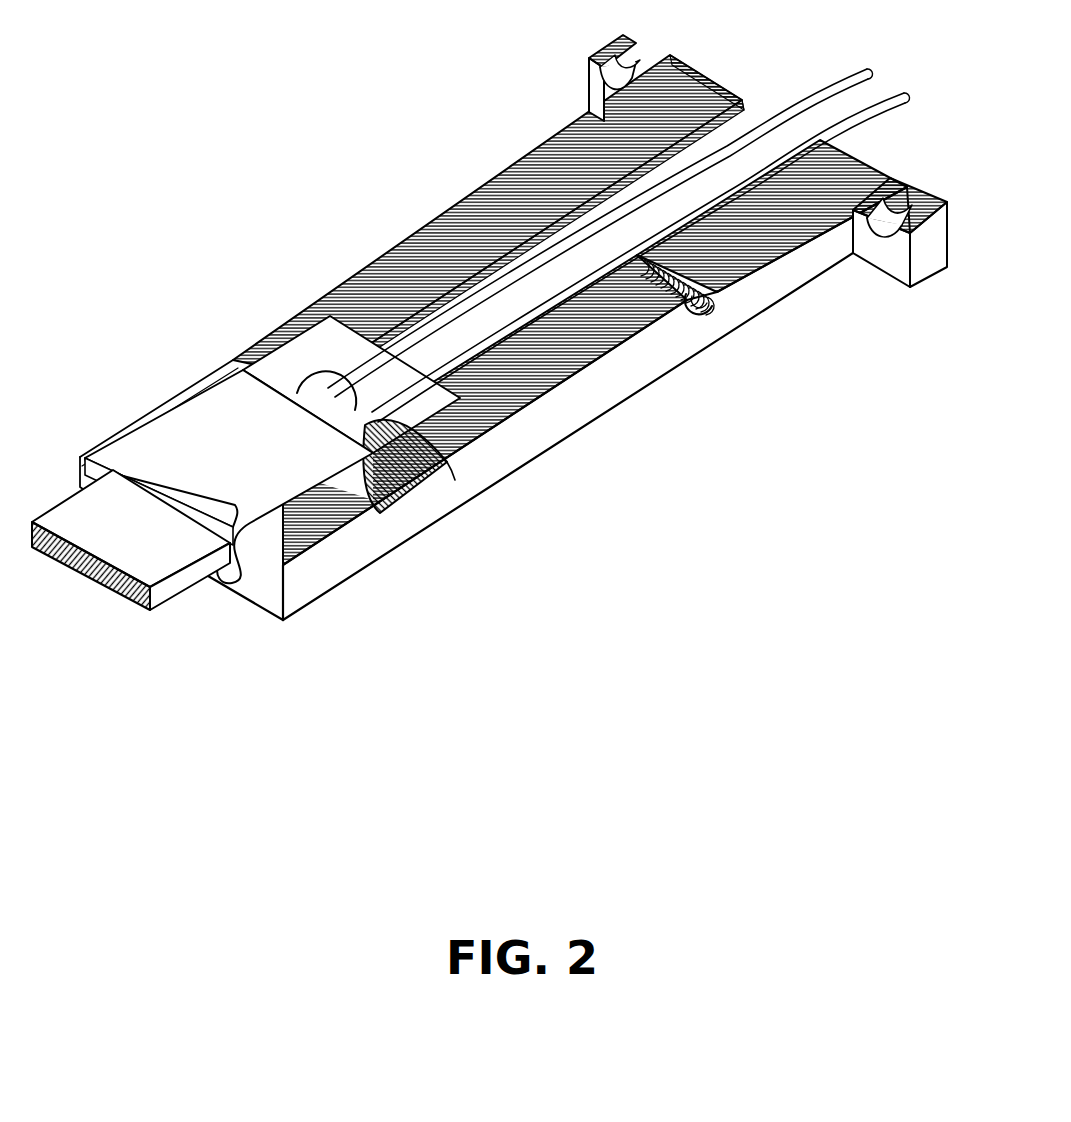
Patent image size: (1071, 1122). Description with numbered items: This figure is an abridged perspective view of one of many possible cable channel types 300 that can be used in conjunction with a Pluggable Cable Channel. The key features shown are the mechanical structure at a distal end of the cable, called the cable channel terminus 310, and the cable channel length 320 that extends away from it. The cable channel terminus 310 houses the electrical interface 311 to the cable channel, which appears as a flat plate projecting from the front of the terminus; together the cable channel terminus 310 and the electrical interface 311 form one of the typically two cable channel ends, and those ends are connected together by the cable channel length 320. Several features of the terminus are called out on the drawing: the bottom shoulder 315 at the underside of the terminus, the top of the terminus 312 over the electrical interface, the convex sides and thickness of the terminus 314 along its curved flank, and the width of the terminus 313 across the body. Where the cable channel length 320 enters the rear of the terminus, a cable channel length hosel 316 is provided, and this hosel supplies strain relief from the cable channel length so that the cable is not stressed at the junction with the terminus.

The cable channel type 300 is at (489, 365).
The cable channel terminus 310 is at (337, 690).
The electrical interface 311 is at (133, 533).
The top of the terminus 312 is at (242, 560).
The width of the terminus 313 is at (248, 450).
The convex sides and thickness of the terminus 314 is at (368, 440).
The bottom shoulder 315 is at (450, 460).
The cable channel length hosel 316 is at (333, 395).
The cable channel length 320 is at (619, 245).